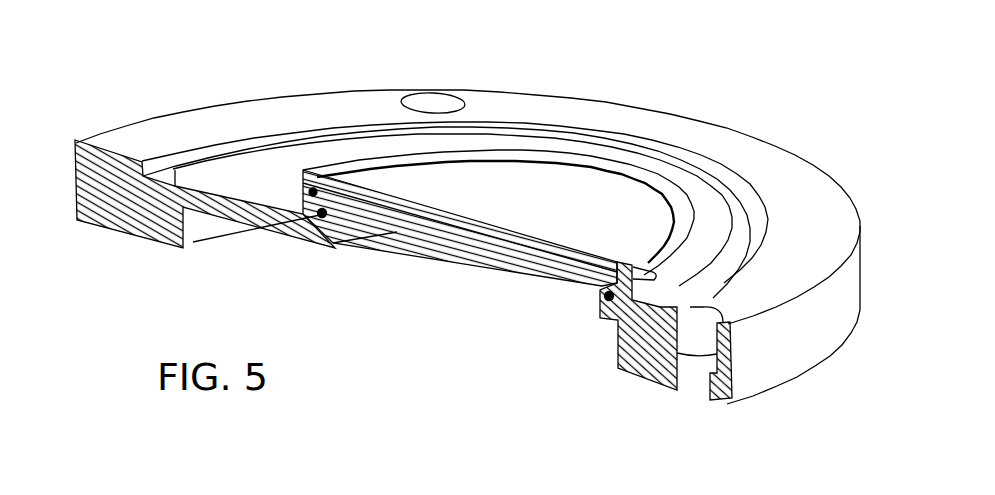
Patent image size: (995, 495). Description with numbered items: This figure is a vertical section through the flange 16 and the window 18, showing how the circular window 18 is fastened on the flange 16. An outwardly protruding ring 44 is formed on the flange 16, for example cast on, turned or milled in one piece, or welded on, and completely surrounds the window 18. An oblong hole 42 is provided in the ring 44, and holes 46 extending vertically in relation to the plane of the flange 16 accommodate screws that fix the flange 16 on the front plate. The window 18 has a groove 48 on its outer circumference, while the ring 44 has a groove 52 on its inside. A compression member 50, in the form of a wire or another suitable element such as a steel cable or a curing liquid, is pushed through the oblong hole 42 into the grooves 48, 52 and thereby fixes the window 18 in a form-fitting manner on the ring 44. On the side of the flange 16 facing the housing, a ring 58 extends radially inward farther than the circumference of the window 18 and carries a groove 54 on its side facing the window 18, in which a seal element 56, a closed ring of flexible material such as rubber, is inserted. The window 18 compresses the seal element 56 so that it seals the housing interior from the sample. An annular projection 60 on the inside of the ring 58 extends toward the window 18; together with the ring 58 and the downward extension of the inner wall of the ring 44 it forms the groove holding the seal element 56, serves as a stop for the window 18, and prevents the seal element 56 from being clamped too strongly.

The flange 16 is at (533, 93).
The window 18 is at (563, 177).
The oblong hole 42 is at (643, 273).
The ring 44 is at (680, 203).
The holes 46 is at (705, 316).
The groove 48 is at (590, 283).
The compression member 50 is at (388, 202).
The groove 52 is at (690, 262).
The groove 54 is at (320, 215).
The seal element 56 is at (316, 225).
The ring 58 is at (333, 243).
The annular projection 60 is at (373, 234).